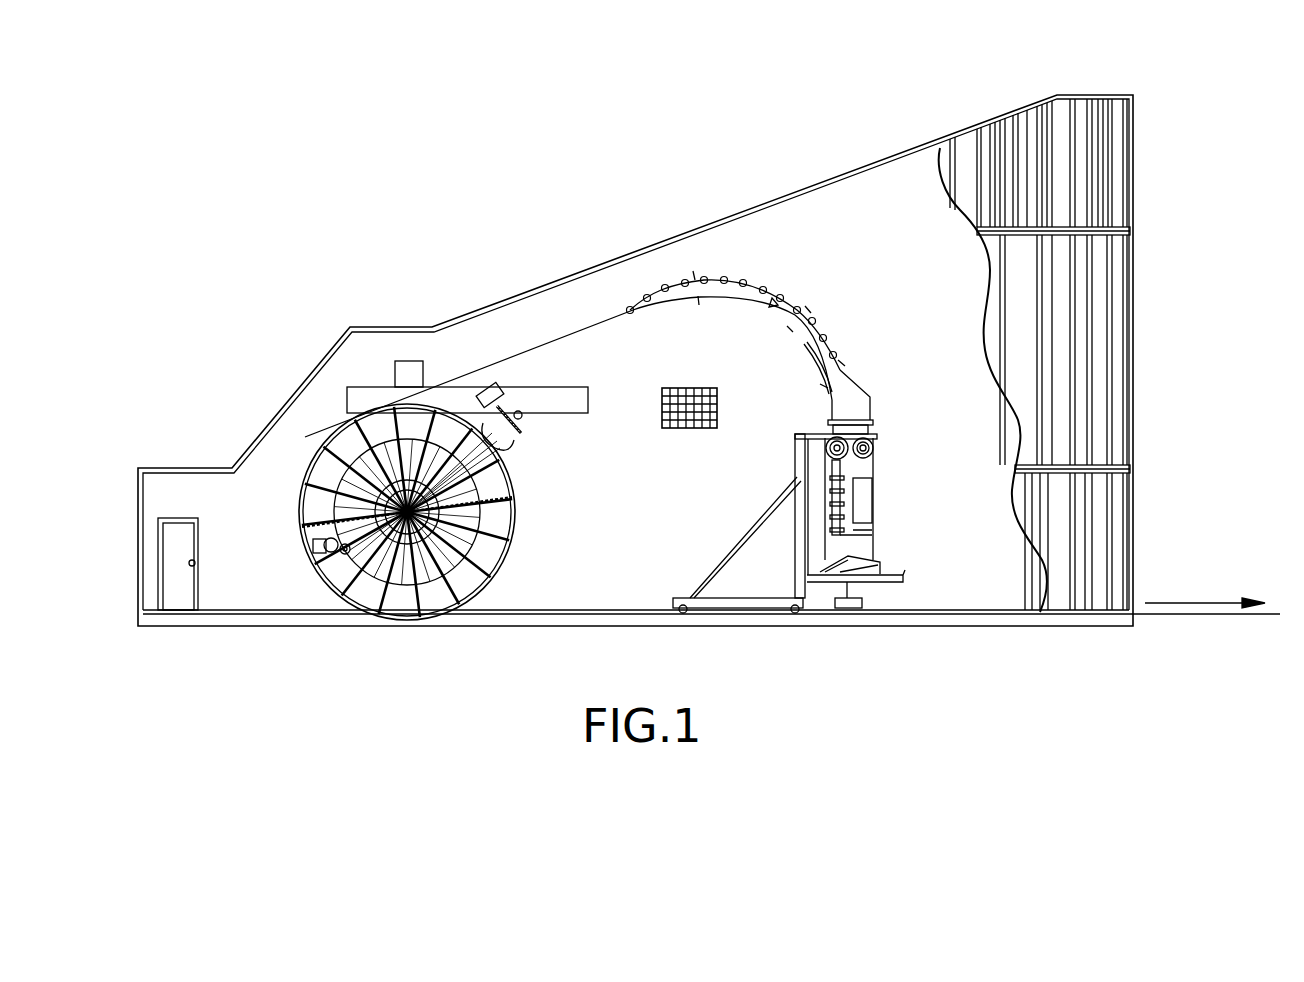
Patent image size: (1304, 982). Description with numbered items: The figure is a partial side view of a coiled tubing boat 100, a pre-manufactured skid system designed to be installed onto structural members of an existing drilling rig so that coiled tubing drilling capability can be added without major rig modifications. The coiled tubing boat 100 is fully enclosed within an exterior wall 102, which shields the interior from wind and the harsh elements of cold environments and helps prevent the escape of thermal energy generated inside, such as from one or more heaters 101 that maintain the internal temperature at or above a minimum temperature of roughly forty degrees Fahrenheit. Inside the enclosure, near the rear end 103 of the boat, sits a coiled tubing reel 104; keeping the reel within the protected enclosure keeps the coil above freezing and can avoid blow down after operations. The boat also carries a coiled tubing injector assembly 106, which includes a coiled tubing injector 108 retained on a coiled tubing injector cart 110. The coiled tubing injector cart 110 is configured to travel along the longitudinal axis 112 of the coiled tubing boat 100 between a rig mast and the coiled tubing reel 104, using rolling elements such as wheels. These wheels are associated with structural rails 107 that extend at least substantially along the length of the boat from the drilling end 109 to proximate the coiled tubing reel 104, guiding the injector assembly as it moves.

The coiled tubing boat 100 is at (745, 143).
The heaters 101 is at (688, 430).
The exterior wall 102 is at (1090, 330).
The rear end 103 is at (138, 545).
The coiled tubing reel 104 is at (317, 577).
The coiled tubing injector assembly 106 is at (916, 600).
The structural rails 107 is at (727, 608).
The coiled tubing injector 108 is at (863, 500).
The drilling end 109 is at (1135, 245).
The coiled tubing injector cart 110 is at (870, 584).
The longitudinal axis 112 is at (1190, 603).